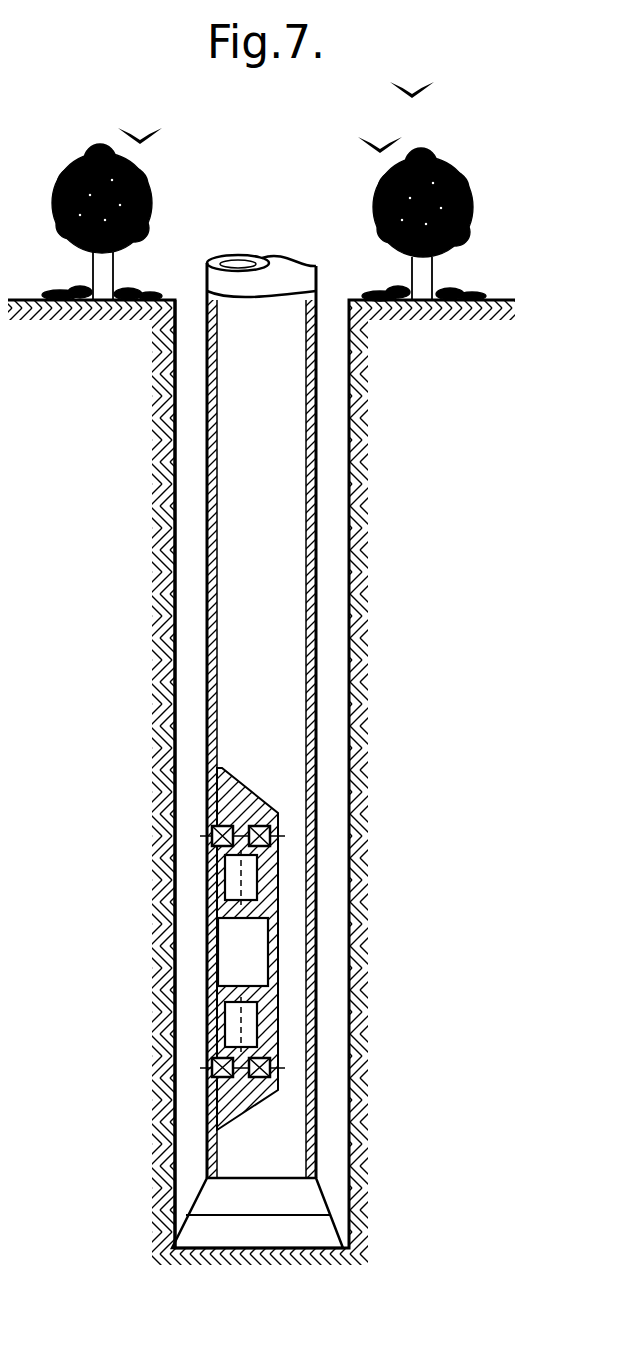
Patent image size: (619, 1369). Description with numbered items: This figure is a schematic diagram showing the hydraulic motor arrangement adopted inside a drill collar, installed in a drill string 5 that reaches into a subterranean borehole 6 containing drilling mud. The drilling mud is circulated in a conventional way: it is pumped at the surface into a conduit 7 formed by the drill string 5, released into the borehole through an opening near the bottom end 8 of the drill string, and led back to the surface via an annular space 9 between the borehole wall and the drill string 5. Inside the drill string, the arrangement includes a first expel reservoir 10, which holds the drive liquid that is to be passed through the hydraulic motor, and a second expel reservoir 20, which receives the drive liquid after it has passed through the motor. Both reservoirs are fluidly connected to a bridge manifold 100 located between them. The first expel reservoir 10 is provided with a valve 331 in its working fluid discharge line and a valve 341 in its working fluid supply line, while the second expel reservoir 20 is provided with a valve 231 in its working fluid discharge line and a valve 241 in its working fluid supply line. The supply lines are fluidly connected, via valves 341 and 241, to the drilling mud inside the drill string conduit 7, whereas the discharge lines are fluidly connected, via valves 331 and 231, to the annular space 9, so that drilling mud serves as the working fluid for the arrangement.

The drill string 5 is at (316, 452).
The subterranean borehole 6 is at (362, 852).
The conduit 7 is at (278, 375).
The bottom end 8 is at (215, 1240).
The annular space 9 is at (190, 557).
The first expel reservoir 10 is at (225, 882).
The second expel reservoir 20 is at (225, 1025).
The bridge manifold 100 is at (227, 957).
The valve 331 is at (212, 836).
The valve 341 is at (258, 826).
The valve 231 is at (212, 1068).
The valve 241 is at (260, 1078).